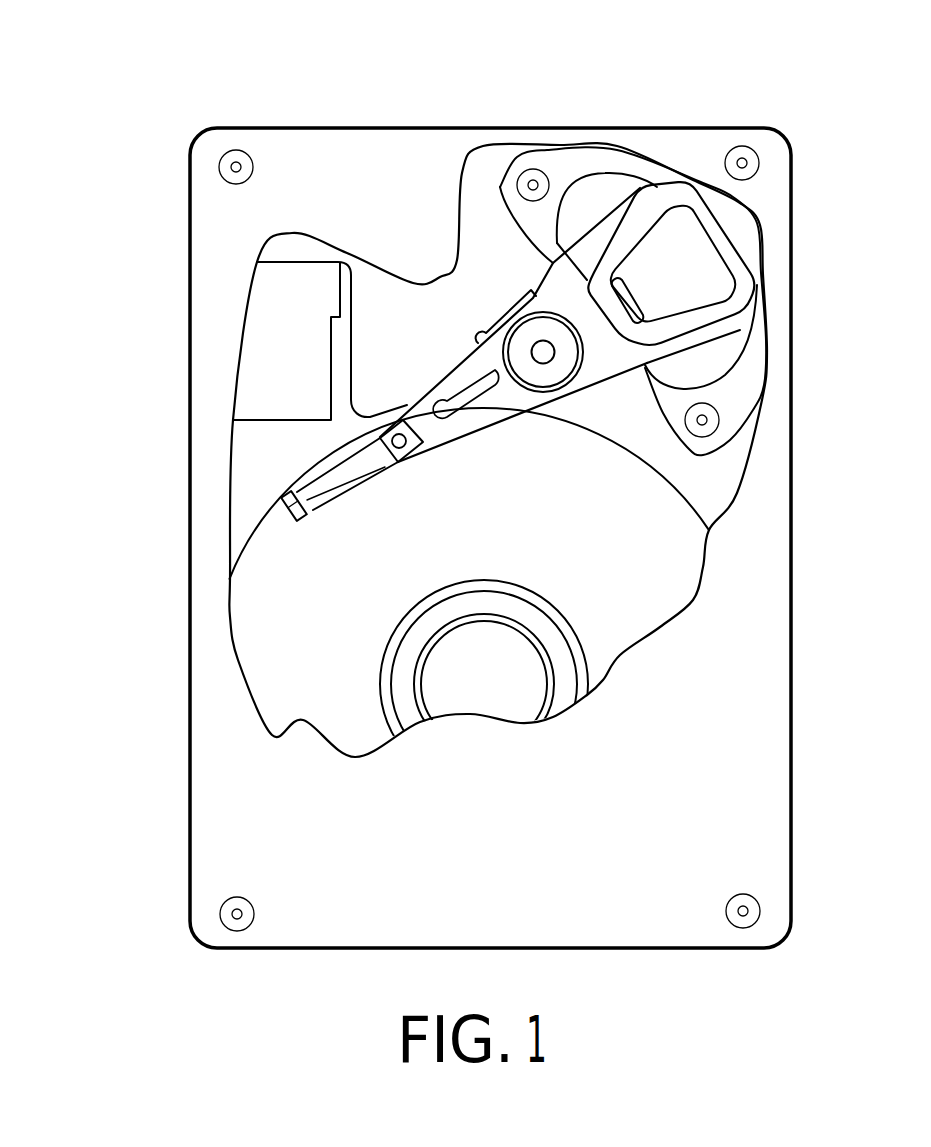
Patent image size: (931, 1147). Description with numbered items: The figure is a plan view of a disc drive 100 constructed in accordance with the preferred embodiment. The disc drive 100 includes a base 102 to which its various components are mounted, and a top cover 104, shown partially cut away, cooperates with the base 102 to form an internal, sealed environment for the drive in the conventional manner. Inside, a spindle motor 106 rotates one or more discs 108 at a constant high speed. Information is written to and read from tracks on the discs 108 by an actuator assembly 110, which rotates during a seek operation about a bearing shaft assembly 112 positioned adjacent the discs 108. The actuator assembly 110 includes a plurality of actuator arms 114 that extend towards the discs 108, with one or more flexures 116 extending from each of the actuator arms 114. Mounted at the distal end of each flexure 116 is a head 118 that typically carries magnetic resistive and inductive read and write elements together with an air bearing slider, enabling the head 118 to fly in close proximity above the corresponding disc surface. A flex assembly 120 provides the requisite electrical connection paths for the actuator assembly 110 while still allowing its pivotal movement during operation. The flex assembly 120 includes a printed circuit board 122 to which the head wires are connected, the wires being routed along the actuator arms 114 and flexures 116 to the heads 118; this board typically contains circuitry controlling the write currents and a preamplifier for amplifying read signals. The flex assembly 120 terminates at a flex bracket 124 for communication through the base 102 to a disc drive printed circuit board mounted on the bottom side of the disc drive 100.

The disc drive 100 is at (237, 90).
The base 102 is at (262, 484).
The top cover 104 is at (242, 787).
The spindle motor 106 is at (485, 692).
The disc 108 is at (657, 600).
The actuator assembly 110 is at (520, 385).
The bearing shaft assembly 112 is at (542, 350).
The actuator arm 114 is at (483, 425).
The flexure 116 is at (340, 478).
The head 118 is at (287, 513).
The flex assembly 120 is at (455, 352).
The printed circuit board 122 is at (500, 310).
The flex bracket 124 is at (277, 355).